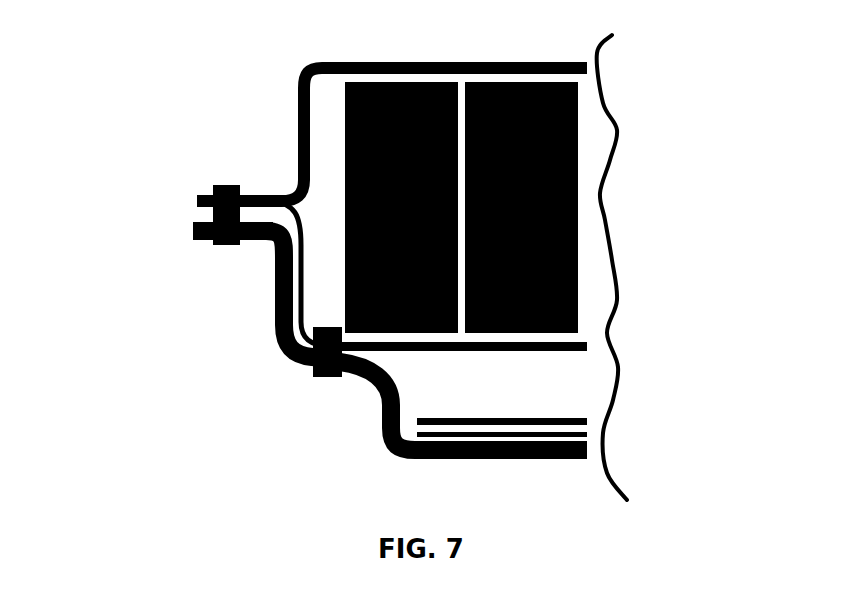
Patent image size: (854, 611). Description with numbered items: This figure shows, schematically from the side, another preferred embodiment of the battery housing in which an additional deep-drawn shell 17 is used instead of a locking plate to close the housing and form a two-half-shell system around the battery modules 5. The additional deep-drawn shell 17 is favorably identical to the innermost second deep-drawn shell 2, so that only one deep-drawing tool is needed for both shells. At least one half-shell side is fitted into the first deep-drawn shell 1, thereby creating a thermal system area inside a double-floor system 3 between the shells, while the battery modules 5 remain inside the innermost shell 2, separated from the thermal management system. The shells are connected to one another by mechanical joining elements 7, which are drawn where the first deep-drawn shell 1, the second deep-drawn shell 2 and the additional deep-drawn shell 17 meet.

The first deep-drawn shell 1 is at (378, 383).
The second deep-drawn shell 2 is at (578, 347).
The double-floor system 3 is at (575, 402).
The battery modules 5 is at (578, 143).
The mechanical joining elements 7 is at (227, 243).
The additional deep-drawn shell 17 is at (297, 137).